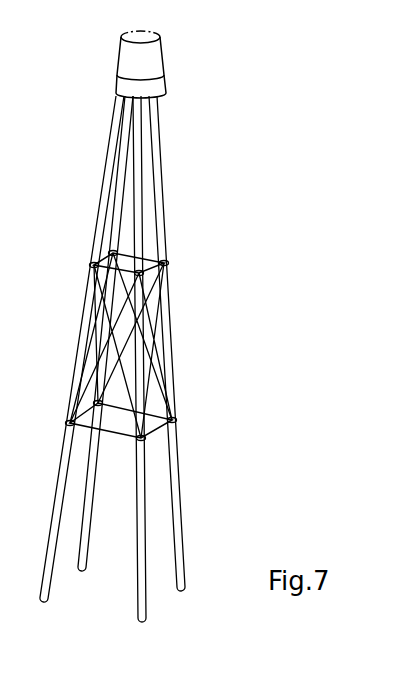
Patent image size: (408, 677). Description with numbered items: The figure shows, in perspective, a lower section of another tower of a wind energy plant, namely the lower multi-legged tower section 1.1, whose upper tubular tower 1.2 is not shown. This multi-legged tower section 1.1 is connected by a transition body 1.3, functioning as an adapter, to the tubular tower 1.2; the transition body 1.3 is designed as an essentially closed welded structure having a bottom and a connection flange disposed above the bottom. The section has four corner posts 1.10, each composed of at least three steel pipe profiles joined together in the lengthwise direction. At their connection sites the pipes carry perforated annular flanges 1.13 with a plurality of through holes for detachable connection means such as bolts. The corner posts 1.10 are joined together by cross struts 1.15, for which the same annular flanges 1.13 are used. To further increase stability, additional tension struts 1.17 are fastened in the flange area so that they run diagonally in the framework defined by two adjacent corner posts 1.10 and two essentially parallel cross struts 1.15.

The lower multi-legged tower section 1.1 is at (212, 302).
The tubular tower 1.2 is at (128, 53).
The transition body 1.3 is at (122, 84).
The corner posts 1.10 is at (176, 482).
The annular flanges 1.13 is at (89, 269).
The cross struts 1.15 is at (122, 251).
The tension struts 1.17 is at (130, 383).